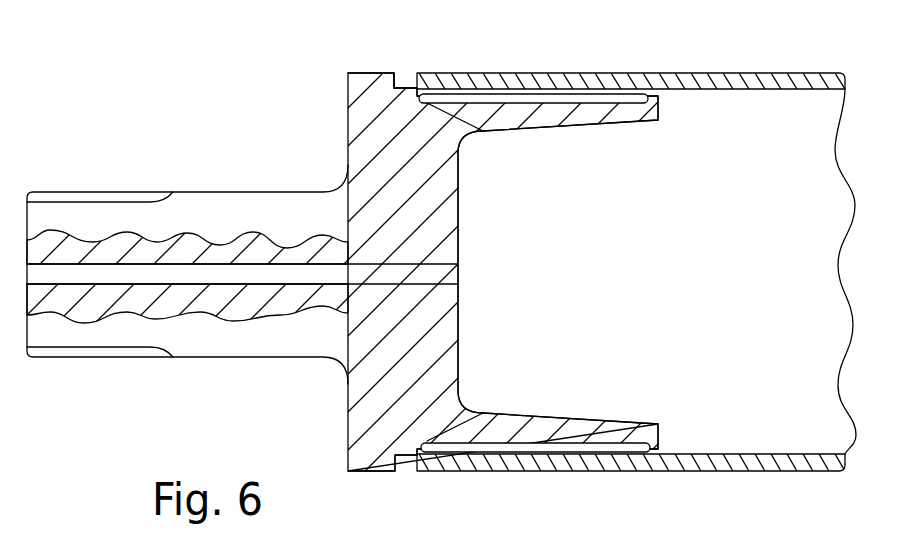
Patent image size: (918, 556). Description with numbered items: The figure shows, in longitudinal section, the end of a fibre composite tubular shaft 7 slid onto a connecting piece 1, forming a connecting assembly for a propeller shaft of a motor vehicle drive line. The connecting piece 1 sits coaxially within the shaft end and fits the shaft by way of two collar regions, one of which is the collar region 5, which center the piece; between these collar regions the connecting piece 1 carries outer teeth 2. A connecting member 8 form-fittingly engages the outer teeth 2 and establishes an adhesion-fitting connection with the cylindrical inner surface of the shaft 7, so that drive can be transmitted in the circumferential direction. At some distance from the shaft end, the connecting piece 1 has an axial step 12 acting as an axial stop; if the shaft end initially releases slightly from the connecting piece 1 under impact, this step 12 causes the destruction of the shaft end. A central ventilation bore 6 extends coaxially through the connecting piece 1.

The connecting piece 1 is at (367, 141).
The outer teeth 2 is at (625, 100).
The collar region 5 is at (651, 455).
The central ventilation bore 6 is at (108, 271).
The shaft 7 is at (522, 82).
The connecting member 8 is at (587, 95).
The axial step 12 is at (396, 86).